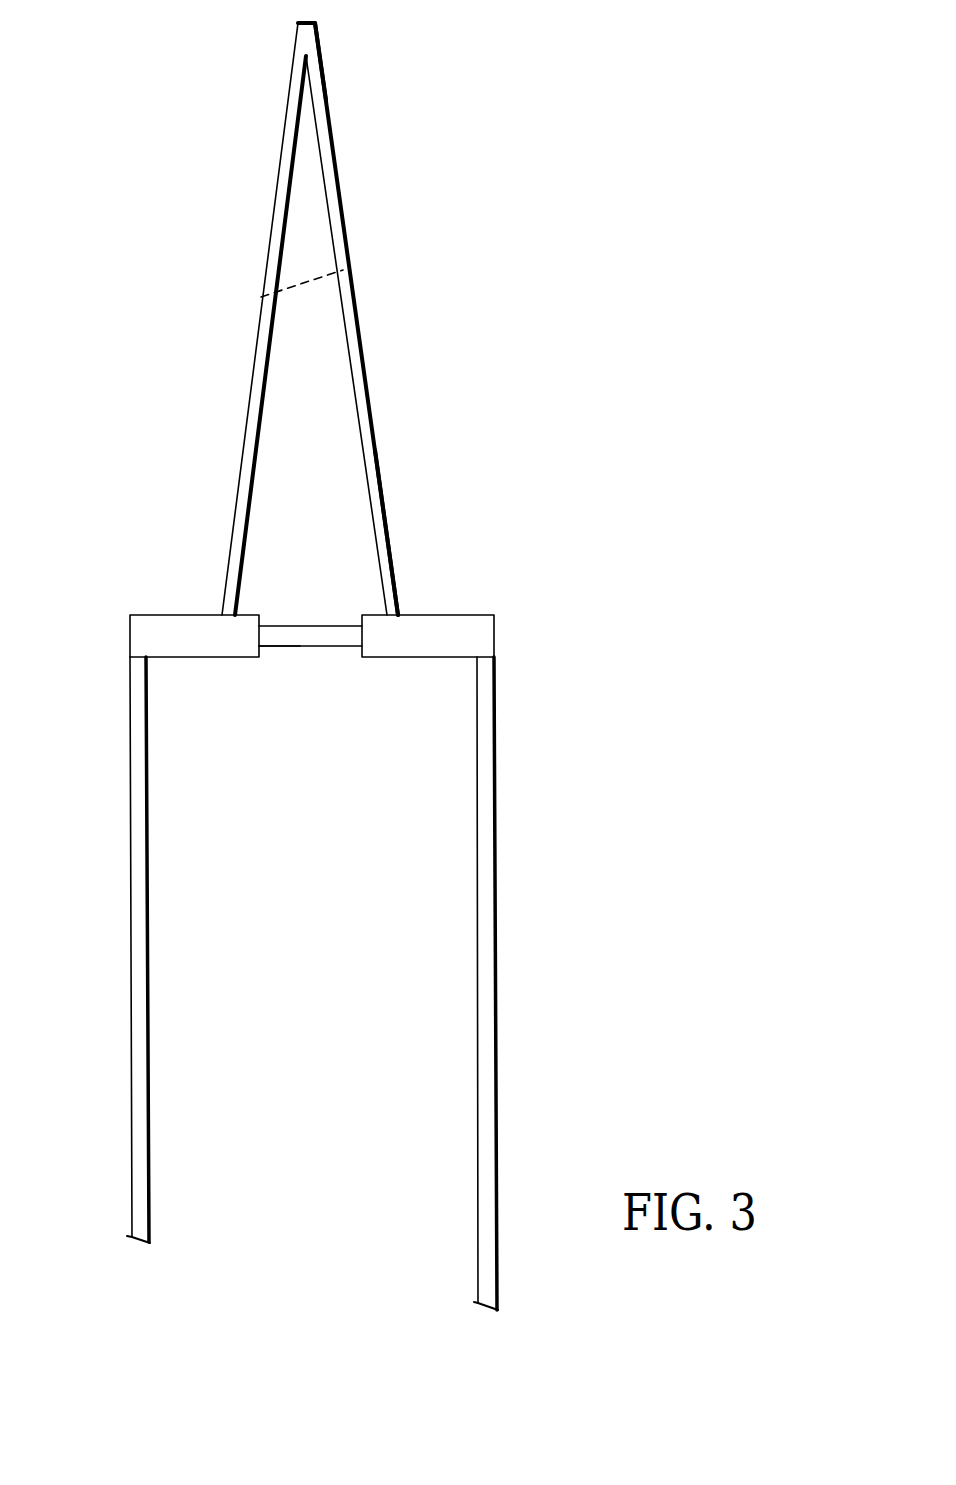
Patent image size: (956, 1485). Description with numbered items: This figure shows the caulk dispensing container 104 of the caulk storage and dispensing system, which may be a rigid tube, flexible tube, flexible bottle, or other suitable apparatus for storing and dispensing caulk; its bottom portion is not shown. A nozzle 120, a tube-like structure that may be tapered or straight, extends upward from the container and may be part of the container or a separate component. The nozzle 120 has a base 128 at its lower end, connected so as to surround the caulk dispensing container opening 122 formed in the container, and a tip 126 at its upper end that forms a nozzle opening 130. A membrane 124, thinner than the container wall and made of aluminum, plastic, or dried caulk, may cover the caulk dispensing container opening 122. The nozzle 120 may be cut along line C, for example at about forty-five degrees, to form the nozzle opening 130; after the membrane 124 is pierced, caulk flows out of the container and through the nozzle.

The caulk dispensing container 104 is at (497, 749).
The nozzle 120 is at (357, 327).
The caulk dispensing container opening 122 is at (273, 653).
The membrane 124 is at (338, 637).
The tip 126 is at (323, 82).
The base 128 is at (384, 505).
The nozzle opening 130 is at (303, 307).
The line C is at (343, 272).